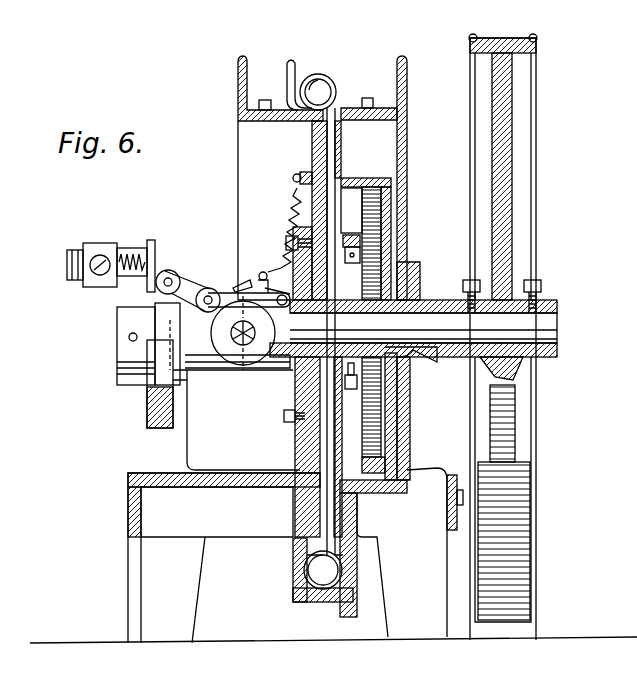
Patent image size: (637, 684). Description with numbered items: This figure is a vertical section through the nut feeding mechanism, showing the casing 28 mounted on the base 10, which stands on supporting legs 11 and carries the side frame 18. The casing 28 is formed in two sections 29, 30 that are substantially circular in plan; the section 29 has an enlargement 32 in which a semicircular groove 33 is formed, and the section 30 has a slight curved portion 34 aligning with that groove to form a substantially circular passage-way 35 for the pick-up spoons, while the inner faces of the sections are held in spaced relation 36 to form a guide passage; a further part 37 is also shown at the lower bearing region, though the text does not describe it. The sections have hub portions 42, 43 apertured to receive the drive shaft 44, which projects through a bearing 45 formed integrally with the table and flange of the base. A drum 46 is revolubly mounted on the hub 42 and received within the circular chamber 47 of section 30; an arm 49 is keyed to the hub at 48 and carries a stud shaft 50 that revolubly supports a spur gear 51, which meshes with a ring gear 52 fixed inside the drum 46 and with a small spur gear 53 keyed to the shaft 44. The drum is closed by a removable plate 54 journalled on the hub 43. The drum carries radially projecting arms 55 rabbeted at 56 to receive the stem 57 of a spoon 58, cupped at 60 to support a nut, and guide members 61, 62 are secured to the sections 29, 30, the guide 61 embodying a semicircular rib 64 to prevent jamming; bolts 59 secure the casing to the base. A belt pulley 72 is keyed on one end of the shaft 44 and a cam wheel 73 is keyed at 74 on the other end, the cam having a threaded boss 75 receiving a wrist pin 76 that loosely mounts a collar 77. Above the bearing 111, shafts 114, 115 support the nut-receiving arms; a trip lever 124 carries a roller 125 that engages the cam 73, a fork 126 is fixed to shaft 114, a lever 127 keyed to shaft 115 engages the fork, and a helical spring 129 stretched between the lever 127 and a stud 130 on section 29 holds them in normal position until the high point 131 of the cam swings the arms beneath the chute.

The base 10 is at (119, 512).
The supporting legs 11 is at (142, 568).
The side frame 18 is at (450, 510).
The casing 28 is at (240, 186).
The casing section 29 is at (300, 455).
The casing section 30 is at (357, 511).
The enlargement 32 is at (298, 584).
The semicircular groove 33 is at (317, 604).
The curved portion 34 is at (353, 578).
The passage-way 35 is at (360, 604).
The spaced relation 36 is at (340, 143).
The bearing cap 37 is at (295, 600).
The hub portion 42 is at (295, 365).
The hub portion 43 is at (390, 307).
The drive shaft 44 is at (528, 310).
The bearing 45 is at (183, 370).
The drum 46 is at (333, 211).
The circular chamber 47 is at (386, 153).
The key 48 is at (350, 389).
The arm 49 is at (390, 238).
The stud shaft 50 is at (380, 212).
The spur gear 51 is at (387, 263).
The ring gear 52 is at (360, 187).
The small spur gear 53 is at (417, 360).
The removable plate 54 is at (393, 434).
The radially projecting arms 55 is at (327, 135).
The rabbet 56 is at (293, 543).
The stem 57 is at (334, 110).
The spoon 58 is at (333, 76).
The bolts 59 is at (288, 417).
The cup 60 is at (313, 80).
The guide member 61 is at (291, 72).
The guide member 62 is at (380, 105).
The semi-circular rib 64 is at (288, 107).
The belt pulley 72 is at (525, 121).
The cam wheel 73 is at (153, 412).
The key 74 is at (127, 338).
The threaded boss 75 is at (134, 248).
The wrist pin 76 is at (68, 258).
The collar 77 is at (100, 243).
The bearing 111 is at (203, 423).
The shaft 114 is at (205, 290).
The shaft 115 is at (311, 281).
The trip lever 124 is at (176, 270).
The roller 125 is at (173, 293).
The fork 126 is at (223, 278).
The lever 127 is at (265, 272).
The helical spring 129 is at (280, 237).
The stud 130 is at (306, 174).
The high point 131 is at (233, 333).